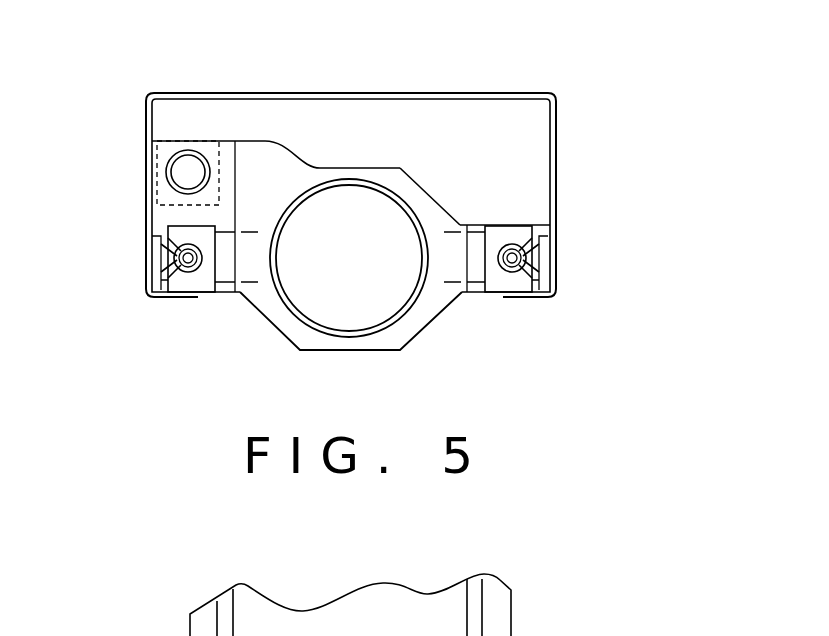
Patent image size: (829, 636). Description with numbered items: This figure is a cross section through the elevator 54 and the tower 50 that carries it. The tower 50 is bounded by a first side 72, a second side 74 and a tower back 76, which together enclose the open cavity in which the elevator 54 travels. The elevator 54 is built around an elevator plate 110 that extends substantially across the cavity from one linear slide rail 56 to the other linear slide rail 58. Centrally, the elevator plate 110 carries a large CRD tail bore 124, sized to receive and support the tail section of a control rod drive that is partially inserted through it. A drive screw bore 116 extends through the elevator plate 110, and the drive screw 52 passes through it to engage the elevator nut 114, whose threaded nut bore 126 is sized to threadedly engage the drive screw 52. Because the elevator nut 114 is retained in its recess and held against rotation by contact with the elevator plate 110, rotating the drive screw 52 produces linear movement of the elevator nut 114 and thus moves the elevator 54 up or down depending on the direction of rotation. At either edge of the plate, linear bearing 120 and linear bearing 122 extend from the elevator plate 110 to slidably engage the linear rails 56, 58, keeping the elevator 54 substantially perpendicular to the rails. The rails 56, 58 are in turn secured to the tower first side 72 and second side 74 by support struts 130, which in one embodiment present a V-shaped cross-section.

The tower 50 is at (422, 93).
The drive screw 52 is at (190, 172).
The elevator 54 is at (436, 349).
The linear slide rail 56 is at (513, 270).
The linear slide rail 58 is at (190, 272).
The first side 72 is at (556, 141).
The second side 74 is at (148, 153).
The tower back 76 is at (366, 93).
The elevator plate 110 is at (425, 198).
The elevator nut 114 is at (174, 146).
The drive screw bore 116 is at (187, 152).
The linear bearing 120 is at (522, 243).
The linear bearing 122 is at (178, 282).
The CRD tail bore 124 is at (376, 276).
The threaded nut bore 126 is at (171, 187).
The support struts 130 is at (165, 262).